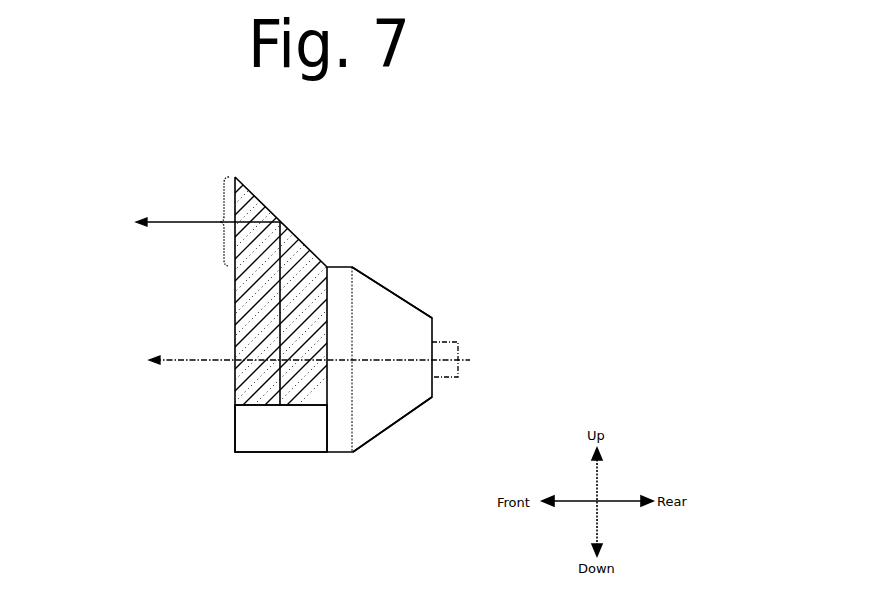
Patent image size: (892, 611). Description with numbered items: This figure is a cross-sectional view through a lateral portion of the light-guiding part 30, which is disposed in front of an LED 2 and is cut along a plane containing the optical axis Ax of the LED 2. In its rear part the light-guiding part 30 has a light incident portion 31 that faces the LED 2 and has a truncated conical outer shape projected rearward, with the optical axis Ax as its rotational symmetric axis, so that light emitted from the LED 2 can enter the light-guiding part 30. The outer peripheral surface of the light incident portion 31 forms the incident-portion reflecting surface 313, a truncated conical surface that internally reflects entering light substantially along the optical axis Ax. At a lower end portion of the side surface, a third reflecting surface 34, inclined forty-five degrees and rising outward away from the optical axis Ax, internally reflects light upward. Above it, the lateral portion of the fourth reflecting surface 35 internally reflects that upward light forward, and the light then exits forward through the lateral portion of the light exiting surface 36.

The light-guiding part 30 is at (407, 215).
The light incident portion 31 is at (407, 440).
The incident-portion reflecting surface 313 is at (371, 291).
The third reflecting surface 34 is at (275, 443).
The fourth reflecting surface 35 is at (252, 215).
The light exiting surface 36 is at (222, 200).
The LED 2 is at (458, 370).
The optical axis Ax is at (295, 360).